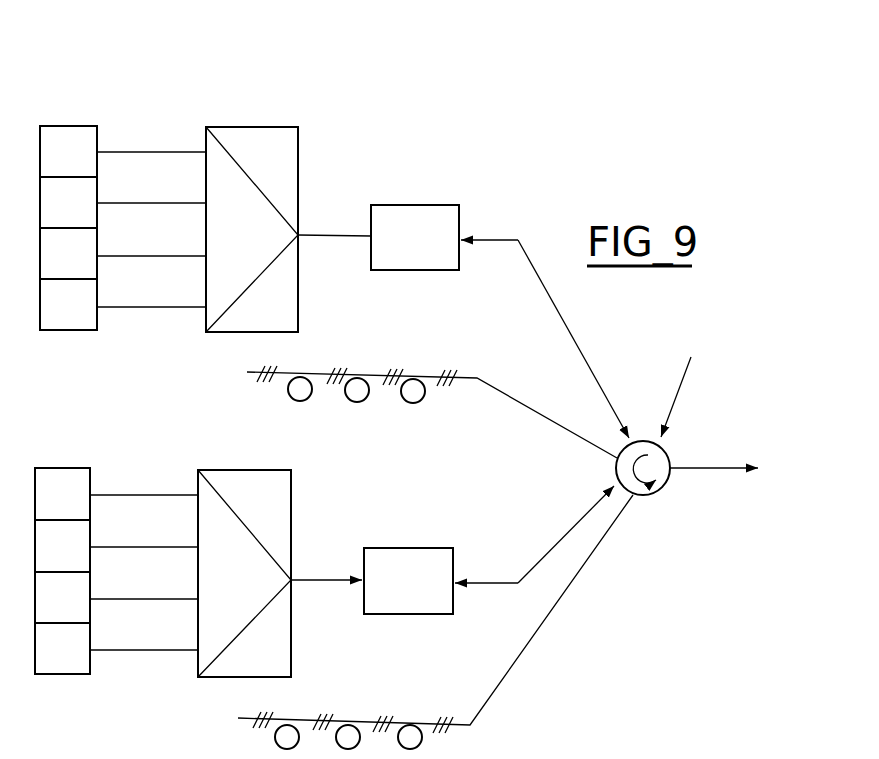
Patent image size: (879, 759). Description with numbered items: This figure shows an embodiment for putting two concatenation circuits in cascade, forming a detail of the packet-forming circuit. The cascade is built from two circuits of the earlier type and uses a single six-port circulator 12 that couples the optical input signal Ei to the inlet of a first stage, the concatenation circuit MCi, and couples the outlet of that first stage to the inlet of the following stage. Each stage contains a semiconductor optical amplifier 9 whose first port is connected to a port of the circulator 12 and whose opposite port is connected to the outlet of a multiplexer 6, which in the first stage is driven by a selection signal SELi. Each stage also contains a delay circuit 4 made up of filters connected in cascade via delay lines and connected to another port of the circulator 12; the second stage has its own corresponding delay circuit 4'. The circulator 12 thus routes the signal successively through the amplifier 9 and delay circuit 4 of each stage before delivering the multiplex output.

The multiplexer 6 is at (266, 127).
The semiconductor optical amplifier 9 is at (445, 205).
The delay circuit 4 is at (432, 384).
The optical fibre line 4' is at (435, 622).
The six-port circulator 12 is at (657, 493).
The selection signal SELi is at (72, 124).
The concatenation circuit MCi is at (373, 152).
The input signal Ei is at (679, 382).